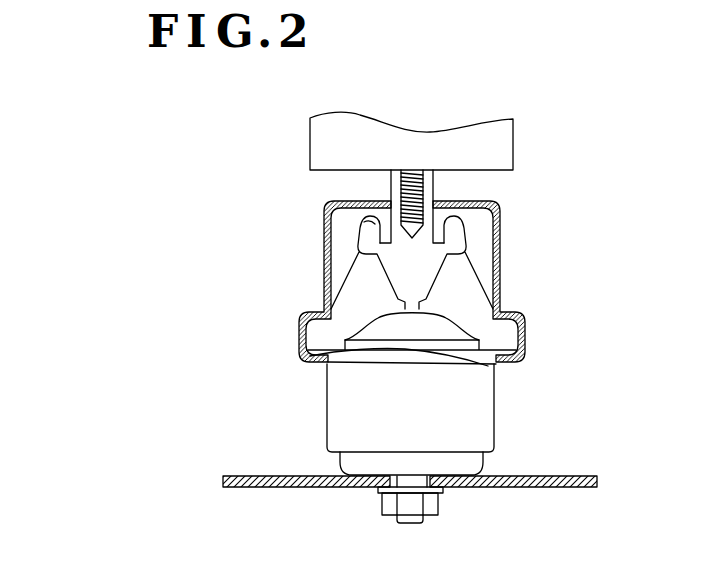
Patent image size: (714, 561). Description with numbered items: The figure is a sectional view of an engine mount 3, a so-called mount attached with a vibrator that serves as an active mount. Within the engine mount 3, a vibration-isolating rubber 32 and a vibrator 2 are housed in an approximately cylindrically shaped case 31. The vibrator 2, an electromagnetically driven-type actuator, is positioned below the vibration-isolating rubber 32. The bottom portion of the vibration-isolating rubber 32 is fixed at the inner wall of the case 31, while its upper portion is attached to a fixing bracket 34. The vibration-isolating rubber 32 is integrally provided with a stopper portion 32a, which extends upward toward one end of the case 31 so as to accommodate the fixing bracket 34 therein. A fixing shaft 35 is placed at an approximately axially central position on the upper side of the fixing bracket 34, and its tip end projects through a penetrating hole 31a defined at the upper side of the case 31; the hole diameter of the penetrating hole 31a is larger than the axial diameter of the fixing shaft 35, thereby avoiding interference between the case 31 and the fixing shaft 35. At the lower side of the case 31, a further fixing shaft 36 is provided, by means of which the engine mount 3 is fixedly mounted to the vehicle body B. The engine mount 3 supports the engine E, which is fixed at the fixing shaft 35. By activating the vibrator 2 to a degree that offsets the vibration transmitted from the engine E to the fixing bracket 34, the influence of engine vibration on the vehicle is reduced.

The vibrator 2 is at (488, 415).
The engine mount 3 is at (558, 329).
The case 31 is at (422, 266).
The penetrating hole 31a is at (383, 201).
The vibration-isolating rubber 32 is at (332, 261).
The stopper portion 32a is at (366, 232).
The fixing bracket 34 is at (449, 254).
The fixing shaft 35 is at (434, 184).
The fixing shaft 36 is at (410, 478).
The vehicle body B is at (278, 476).
The engine E is at (513, 143).